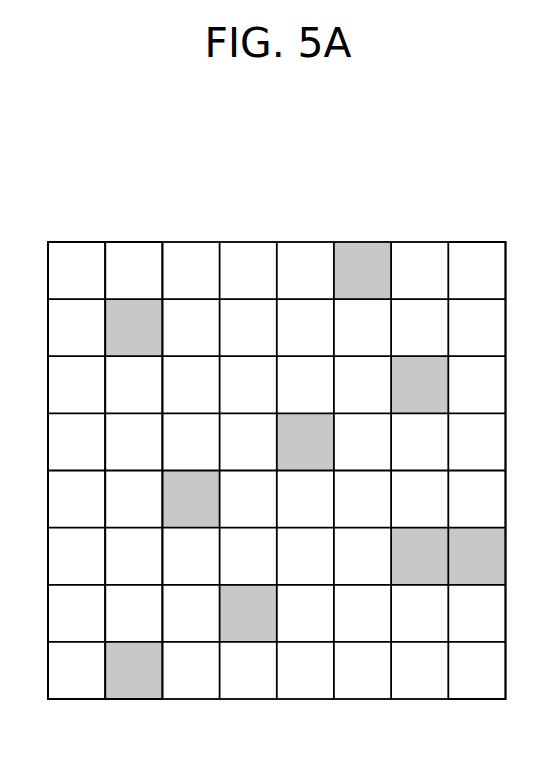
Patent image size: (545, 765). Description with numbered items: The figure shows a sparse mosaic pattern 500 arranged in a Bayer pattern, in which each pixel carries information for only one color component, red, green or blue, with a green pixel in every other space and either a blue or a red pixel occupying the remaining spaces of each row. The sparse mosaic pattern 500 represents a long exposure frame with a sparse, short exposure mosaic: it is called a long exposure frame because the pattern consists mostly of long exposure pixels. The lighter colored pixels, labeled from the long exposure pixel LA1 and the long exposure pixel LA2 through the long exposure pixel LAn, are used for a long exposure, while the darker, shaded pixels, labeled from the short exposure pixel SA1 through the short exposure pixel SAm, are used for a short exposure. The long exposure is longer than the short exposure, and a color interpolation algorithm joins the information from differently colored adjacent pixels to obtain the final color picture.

The sparse mosaic pattern 500 is at (276, 441).
The long exposure pixel LA1 is at (61, 251).
The long exposure pixel LA2 is at (118, 251).
The long exposure pixel LAn is at (462, 692).
The short exposure pixel SA1 is at (348, 249).
The short exposure pixel SAm is at (120, 693).